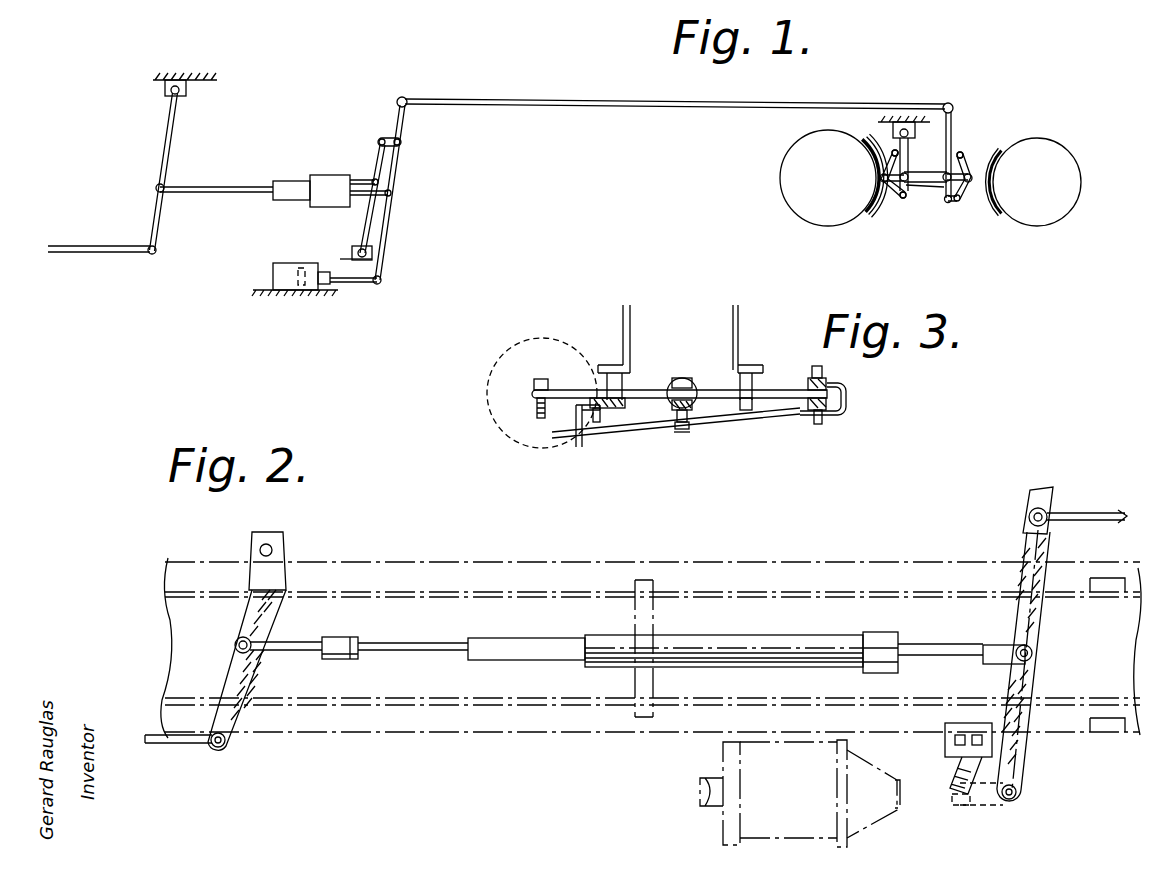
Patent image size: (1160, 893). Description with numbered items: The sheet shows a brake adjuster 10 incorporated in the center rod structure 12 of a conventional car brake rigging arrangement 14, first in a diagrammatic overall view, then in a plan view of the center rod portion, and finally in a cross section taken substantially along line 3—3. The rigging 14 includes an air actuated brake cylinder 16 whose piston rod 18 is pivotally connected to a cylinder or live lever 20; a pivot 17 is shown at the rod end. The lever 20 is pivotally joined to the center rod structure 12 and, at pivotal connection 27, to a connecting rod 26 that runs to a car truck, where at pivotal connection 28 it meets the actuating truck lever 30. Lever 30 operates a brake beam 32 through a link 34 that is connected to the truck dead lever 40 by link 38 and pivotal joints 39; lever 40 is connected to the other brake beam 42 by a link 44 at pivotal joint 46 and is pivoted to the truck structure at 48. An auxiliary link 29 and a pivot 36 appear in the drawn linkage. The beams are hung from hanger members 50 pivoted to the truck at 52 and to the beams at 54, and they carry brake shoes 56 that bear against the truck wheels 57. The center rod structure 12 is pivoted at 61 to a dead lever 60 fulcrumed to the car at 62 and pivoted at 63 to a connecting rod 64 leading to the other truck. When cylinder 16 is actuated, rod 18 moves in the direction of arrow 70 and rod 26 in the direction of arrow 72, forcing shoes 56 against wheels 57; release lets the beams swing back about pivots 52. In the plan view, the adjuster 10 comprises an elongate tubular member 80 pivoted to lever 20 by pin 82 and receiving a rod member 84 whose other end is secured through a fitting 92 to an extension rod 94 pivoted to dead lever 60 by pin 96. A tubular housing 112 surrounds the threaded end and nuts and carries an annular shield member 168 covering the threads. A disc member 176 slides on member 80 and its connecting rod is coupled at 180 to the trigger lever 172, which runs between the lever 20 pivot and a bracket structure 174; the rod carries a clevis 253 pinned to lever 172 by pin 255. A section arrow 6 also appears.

In FIG. 2, the section line 3— 3 is at (1083, 575).
In FIG. 2, the direction arrow 6 is at (490, 622).
In FIG. 1, the brake adjuster 10 is at (330, 160).
In FIG. 3, the brake adjuster 10 is at (690, 378).
In FIG. 2, the brake adjuster 10 is at (692, 618).
In FIG. 1, the center rod structure 12 is at (240, 200).
In FIG. 1, the brake rigging arrangement 14 is at (585, 78).
In FIG. 1, the brake cylinder 16 is at (285, 292).
In FIG. 3, the brake cylinder 16 is at (552, 352).
In FIG. 2, the brake cylinder 16 is at (781, 818).
In FIG. 1, the pivot pin 17 is at (382, 284).
In FIG. 1, the piston rod 18 is at (346, 284).
In FIG. 2, the piston rod 18 is at (978, 806).
In FIG. 1, the cylinder lever 20 is at (388, 250).
In FIG. 3, the cylinder lever 20 is at (768, 390).
In FIG. 2, the cylinder lever 20 is at (1032, 690).
In FIG. 1, the connecting rod 26 is at (470, 100).
In FIG. 2, the connecting rod 26 is at (1105, 513).
In FIG. 1, the pivotal connection 27 is at (406, 98).
In FIG. 2, the pivotal connection 27 is at (1037, 505).
In FIG. 1, the pivotal connection 28 is at (952, 106).
In FIG. 1, the auxiliary link 29 is at (392, 195).
In FIG. 1, the actuating truck lever 30 is at (952, 125).
In FIG. 1, the brake beam 32 is at (956, 203).
In FIG. 1, the link 34 is at (950, 205).
In FIG. 1, the horizontal link 36 is at (945, 200).
In FIG. 1, the link 38 is at (922, 188).
In FIG. 1, the pivotal joints 39 is at (908, 176).
In FIG. 1, the truck dead lever 40 is at (910, 150).
In FIG. 1, the brake beam 42 is at (878, 185).
In FIG. 1, the link 44 is at (880, 206).
In FIG. 1, the pivotal joint 46 is at (888, 216).
In FIG. 1, the pivotal connection 48 is at (904, 128).
In FIG. 1, the hanger members 50 is at (890, 150).
In FIG. 1, the hanger pivot 52 is at (891, 149).
In FIG. 1, the hanger pivot 54 is at (880, 183).
In FIG. 1, the brake shoes 56 is at (868, 213).
In FIG. 1, the truck wheels 57 is at (800, 162).
In FIG. 1, the dead lever 60 is at (172, 148).
In FIG. 1, the pivotal connection 61 is at (164, 186).
In FIG. 1, the fulcrum 62 is at (186, 93).
In FIG. 1, the pivotal connection 63 is at (153, 255).
In FIG. 1, the connecting rod 64 is at (96, 254).
In FIG. 1, the arrow 70 is at (440, 278).
In FIG. 1, the arrow 72 is at (510, 40).
In FIG. 2, the tubular member 80 is at (915, 652).
In FIG. 2, the pin 82 is at (1032, 650).
In FIG. 2, the rod member 84 is at (415, 643).
In FIG. 2, the fitting 92 is at (345, 637).
In FIG. 2, the extension rod 94 is at (290, 642).
In FIG. 2, the pin 96 is at (236, 641).
In FIG. 2, the tubular housing 112 is at (770, 630).
In FIG. 2, the annular shield member 168 is at (548, 662).
In FIG. 3, the trigger lever 172 is at (755, 416).
In FIG. 3, the bracket structure 174 is at (568, 442).
In FIG. 2, the bracket structure 174 is at (940, 744).
In FIG. 2, the disc member 176 is at (882, 628).
In FIG. 3, the coupling 180 is at (675, 434).
In FIG. 3, the clevis 253 is at (690, 430).
In FIG. 3, the pin 255 is at (688, 434).